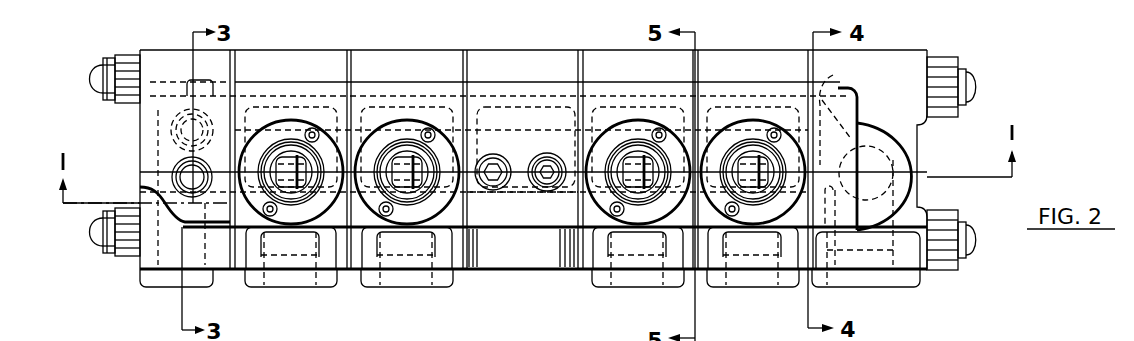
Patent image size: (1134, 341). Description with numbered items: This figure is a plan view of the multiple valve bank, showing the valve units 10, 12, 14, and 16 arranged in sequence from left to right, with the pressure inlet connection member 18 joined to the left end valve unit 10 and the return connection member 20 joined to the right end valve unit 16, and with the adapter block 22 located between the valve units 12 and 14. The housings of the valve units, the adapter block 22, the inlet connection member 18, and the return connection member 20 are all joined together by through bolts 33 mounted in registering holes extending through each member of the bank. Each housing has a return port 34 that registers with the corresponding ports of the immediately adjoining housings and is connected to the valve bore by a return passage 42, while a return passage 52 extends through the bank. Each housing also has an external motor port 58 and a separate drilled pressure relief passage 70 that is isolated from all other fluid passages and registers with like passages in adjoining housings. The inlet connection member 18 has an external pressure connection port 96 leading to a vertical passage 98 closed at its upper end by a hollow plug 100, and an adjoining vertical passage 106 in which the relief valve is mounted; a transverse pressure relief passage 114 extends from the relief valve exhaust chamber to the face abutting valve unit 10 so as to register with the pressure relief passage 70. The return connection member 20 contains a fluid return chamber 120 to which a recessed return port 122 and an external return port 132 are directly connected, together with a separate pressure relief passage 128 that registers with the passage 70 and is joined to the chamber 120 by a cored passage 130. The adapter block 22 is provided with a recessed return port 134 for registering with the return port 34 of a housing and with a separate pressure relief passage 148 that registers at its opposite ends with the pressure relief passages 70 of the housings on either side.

The valve unit 10 is at (278, 41).
The valve unit 12 is at (392, 41).
The valve unit 14 is at (593, 41).
The valve unit 16 is at (745, 41).
The pressure inlet connection member 18 is at (148, 41).
The return connection member 20 is at (893, 41).
The adapter block 22 is at (504, 256).
The through bolts 33 is at (88, 78).
The return port 34 is at (573, 108).
The return passage 42 is at (575, 160).
The return passage 52 is at (639, 113).
The external motor port 58 is at (263, 290).
The pressure relief passage 70 is at (286, 97).
The external pressure connection port 96 is at (161, 290).
The vertical passage 98 is at (178, 189).
The hollow plug 100 is at (178, 172).
The vertical passage 106 is at (171, 128).
The transverse pressure relief passage 114 is at (210, 92).
The fluid return chamber 120 is at (918, 165).
The recessed return port 122 is at (830, 233).
The pressure relief passage 128 is at (827, 97).
The cored passage 130 is at (869, 126).
The external return port 132 is at (898, 288).
The recessed return port 134 is at (514, 194).
The pressure relief passage 148 is at (515, 97).